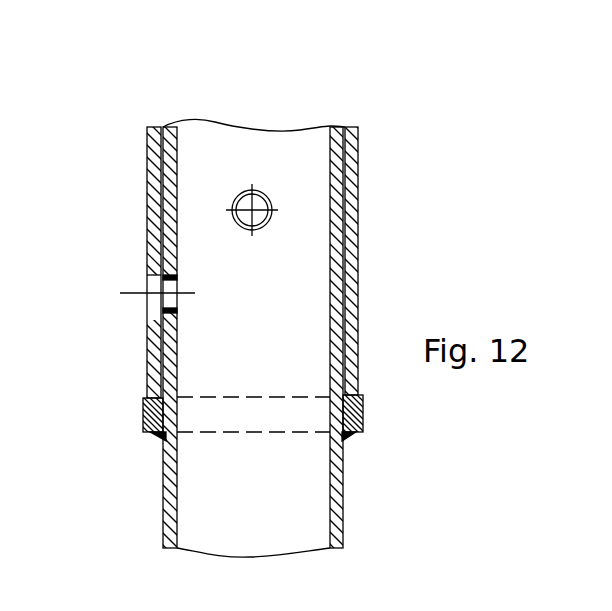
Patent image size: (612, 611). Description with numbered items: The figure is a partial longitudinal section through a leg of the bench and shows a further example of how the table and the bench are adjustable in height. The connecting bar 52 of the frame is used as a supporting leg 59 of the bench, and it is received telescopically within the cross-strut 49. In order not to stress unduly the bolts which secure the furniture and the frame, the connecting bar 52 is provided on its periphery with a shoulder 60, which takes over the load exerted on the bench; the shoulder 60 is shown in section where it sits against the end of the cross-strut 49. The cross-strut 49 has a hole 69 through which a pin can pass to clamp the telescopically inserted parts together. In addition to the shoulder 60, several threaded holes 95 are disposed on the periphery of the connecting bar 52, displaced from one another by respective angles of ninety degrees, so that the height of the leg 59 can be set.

The cross-strut 49 is at (148, 190).
The connecting bar 52 is at (165, 507).
The shoulder 60 is at (143, 417).
The hole 69 is at (148, 279).
The threaded holes 95 is at (258, 205).
The supporting leg 59 is at (394, 277).